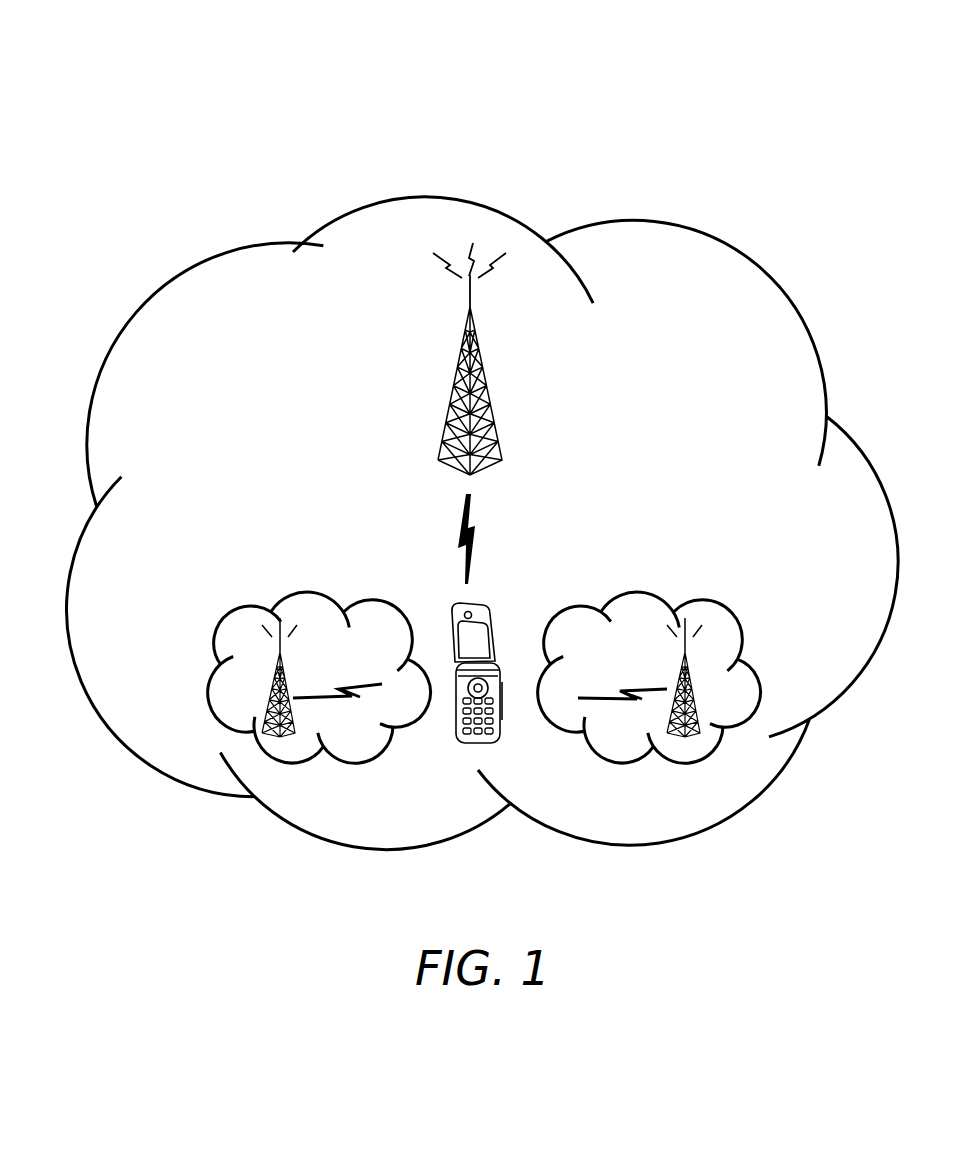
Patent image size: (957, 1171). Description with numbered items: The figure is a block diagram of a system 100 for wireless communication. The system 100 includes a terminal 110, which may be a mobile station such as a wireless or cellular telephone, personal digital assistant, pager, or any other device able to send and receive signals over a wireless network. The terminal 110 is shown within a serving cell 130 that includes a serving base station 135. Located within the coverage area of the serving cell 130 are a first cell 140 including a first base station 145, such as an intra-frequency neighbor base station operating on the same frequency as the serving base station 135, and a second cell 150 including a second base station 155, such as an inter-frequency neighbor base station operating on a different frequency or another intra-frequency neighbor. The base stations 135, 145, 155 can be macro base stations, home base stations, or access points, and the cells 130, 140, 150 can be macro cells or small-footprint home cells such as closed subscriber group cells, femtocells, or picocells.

The system 100 is at (90, 70).
The terminal 110 is at (478, 606).
The serving cell 130 is at (192, 268).
The serving base station 135 is at (451, 397).
The first cell 140 is at (718, 608).
The first base station 145 is at (682, 668).
The second cell 150 is at (227, 618).
The second base station 155 is at (283, 661).